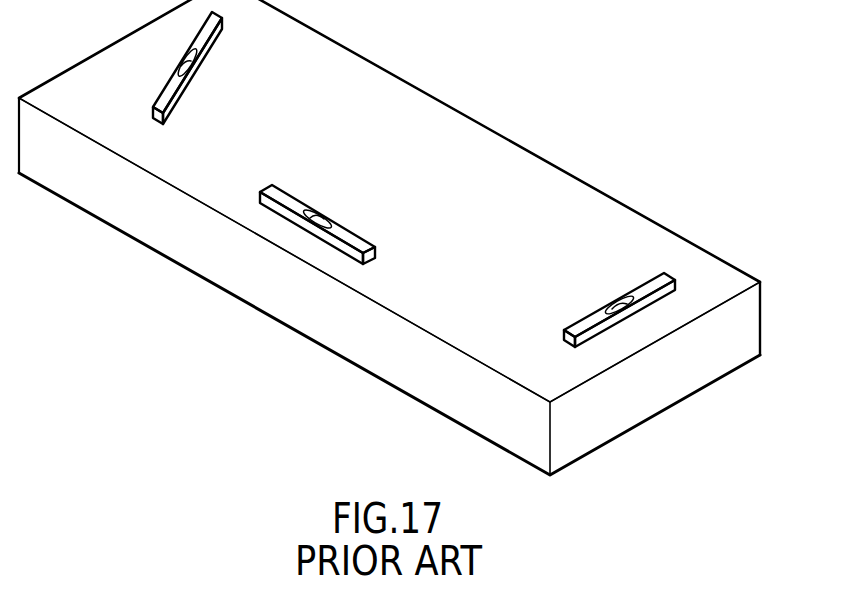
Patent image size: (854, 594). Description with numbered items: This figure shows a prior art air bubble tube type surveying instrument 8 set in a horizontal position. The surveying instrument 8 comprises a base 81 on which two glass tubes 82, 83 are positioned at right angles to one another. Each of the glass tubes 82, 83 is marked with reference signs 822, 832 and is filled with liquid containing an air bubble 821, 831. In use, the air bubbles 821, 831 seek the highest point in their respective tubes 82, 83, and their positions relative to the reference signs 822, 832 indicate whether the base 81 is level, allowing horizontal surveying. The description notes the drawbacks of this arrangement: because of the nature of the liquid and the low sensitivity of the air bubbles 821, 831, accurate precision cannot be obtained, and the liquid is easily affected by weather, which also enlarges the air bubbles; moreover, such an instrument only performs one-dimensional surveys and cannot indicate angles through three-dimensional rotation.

The surveying instrument 8 is at (553, 160).
The base 81 is at (463, 135).
The glass tube 82 is at (269, 273).
The air bubble 821 is at (303, 231).
The reference sign 822 is at (337, 231).
The glass tube 83 is at (638, 367).
The air bubble 831 is at (620, 298).
The reference sign 832 is at (607, 315).